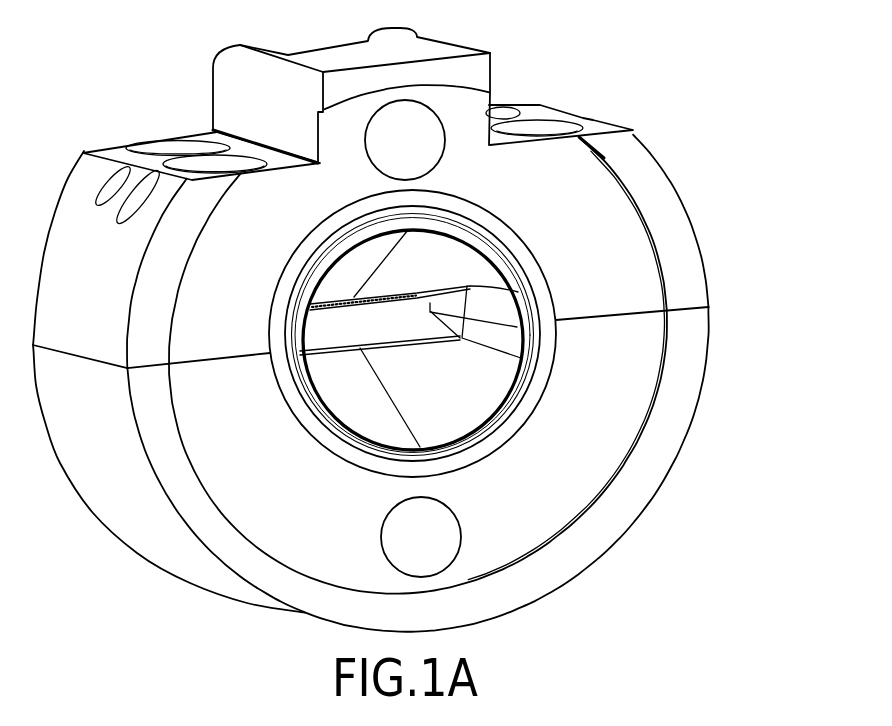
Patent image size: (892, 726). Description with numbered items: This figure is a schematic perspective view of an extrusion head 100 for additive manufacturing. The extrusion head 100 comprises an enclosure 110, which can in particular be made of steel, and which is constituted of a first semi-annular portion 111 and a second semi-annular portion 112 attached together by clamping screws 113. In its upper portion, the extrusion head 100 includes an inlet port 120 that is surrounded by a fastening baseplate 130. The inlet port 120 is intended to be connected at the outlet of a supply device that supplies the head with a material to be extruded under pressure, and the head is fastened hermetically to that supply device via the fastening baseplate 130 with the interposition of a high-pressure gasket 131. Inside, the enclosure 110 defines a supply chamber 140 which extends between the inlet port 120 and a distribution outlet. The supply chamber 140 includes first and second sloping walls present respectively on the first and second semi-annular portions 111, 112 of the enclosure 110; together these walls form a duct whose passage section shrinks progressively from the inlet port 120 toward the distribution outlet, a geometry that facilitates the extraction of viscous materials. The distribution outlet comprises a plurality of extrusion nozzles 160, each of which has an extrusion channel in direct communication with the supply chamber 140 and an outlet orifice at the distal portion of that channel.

The extrusion head 100 is at (438, 330).
The enclosure 110 is at (438, 330).
The first semi-annular portion 111 is at (673, 247).
The second semi-annular portion 112 is at (682, 370).
The clamping screws 113 is at (207, 167).
The inlet port 120 is at (372, 406).
The fastening baseplate 130 is at (553, 493).
The high-pressure gasket 131 is at (552, 352).
The supply chamber 140 is at (403, 348).
The extrusion nozzles 160 is at (360, 312).